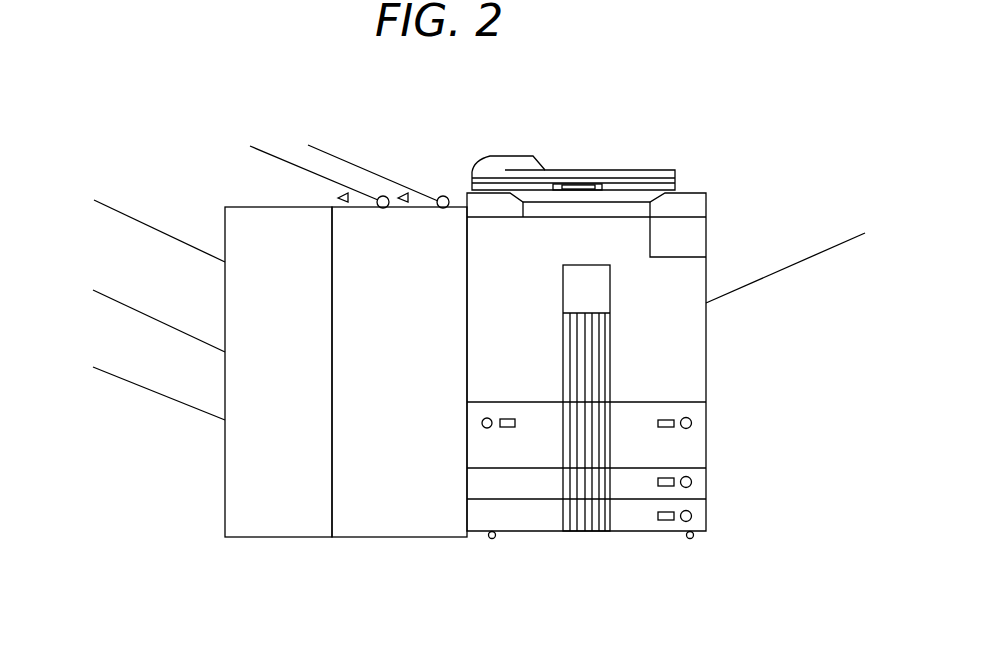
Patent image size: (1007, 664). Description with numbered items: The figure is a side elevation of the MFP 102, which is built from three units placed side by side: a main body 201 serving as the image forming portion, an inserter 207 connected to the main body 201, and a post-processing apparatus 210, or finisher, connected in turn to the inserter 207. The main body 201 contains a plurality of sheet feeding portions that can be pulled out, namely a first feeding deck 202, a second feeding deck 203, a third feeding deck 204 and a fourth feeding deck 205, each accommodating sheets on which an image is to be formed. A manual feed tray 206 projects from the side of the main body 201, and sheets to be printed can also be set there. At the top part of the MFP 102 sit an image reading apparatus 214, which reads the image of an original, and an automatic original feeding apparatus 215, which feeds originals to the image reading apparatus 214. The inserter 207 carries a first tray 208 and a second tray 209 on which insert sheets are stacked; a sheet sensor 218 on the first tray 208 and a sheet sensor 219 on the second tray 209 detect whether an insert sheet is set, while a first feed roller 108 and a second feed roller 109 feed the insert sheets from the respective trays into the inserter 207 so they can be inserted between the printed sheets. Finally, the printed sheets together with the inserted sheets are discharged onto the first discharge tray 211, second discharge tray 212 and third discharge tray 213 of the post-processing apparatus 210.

The MFP 102 is at (616, 124).
The first feed roller 108 is at (443, 195).
The second feed roller 109 is at (377, 196).
The main body 201 is at (708, 350).
The first feeding deck 202 is at (695, 441).
The second feeding deck 203 is at (507, 417).
The third feeding deck 204 is at (698, 485).
The fourth feeding deck 205 is at (698, 518).
The manual feed tray 206 is at (792, 263).
The inserter 207 is at (402, 537).
The first tray 208 is at (342, 156).
The second tray 209 is at (263, 150).
The post-processing apparatus 210 is at (280, 537).
The first discharge tray 211 is at (120, 209).
The second discharge tray 212 is at (120, 300).
The third discharge tray 213 is at (120, 377).
The image reading apparatus 214 is at (698, 200).
The automatic original feeding apparatus 215 is at (510, 162).
The sheet sensor 218 is at (403, 190).
The sheet sensor 219 is at (338, 195).